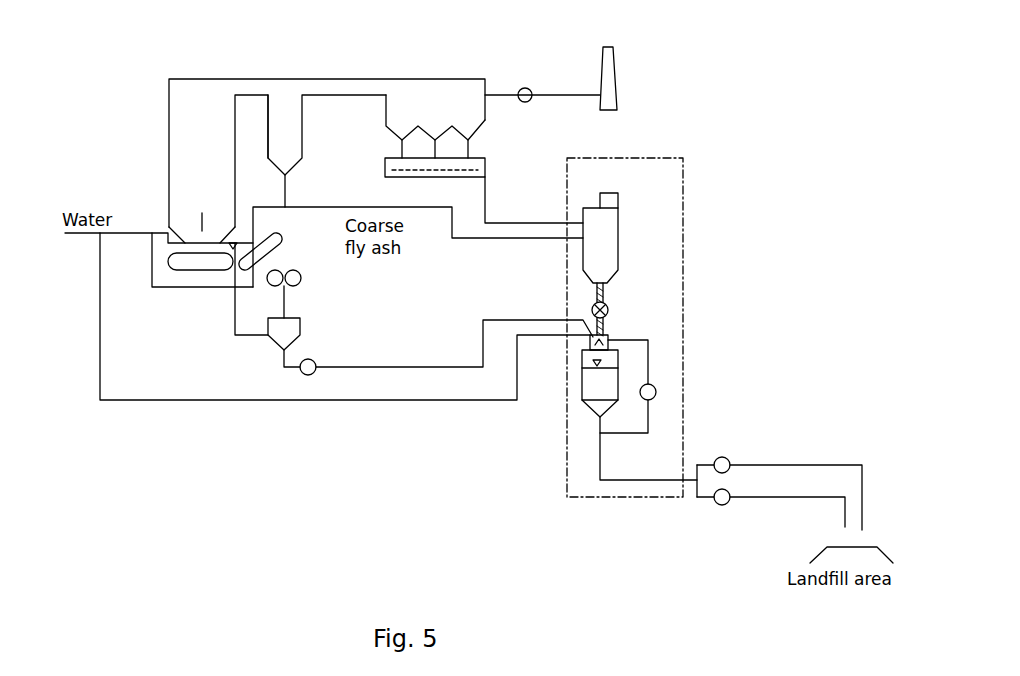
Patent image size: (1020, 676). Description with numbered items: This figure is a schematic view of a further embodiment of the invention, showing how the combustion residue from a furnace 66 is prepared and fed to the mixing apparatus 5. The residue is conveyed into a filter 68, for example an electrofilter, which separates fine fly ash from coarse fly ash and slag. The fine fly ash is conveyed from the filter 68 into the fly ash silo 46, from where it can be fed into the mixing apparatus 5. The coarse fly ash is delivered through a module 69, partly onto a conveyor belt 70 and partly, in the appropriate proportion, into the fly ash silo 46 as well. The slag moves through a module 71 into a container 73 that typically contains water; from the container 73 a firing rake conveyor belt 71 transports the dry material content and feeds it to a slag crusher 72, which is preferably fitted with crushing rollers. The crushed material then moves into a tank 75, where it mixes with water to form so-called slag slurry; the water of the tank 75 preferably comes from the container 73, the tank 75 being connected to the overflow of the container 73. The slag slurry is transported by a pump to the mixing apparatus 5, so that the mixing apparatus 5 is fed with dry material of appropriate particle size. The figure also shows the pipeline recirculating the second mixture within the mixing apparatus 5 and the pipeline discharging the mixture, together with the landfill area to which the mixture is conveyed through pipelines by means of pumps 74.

The mixing apparatus 5 is at (627, 330).
The fly ash silo 46 is at (618, 218).
The furnace 66 is at (617, 82).
The filter 68 is at (485, 113).
The module 69 is at (268, 120).
The conveyor belt 70 is at (182, 268).
The module 71 is at (169, 172).
The slag crusher 72 is at (268, 285).
The container 73 is at (152, 268).
The pumps 74 is at (730, 460).
The tank 75 is at (282, 348).